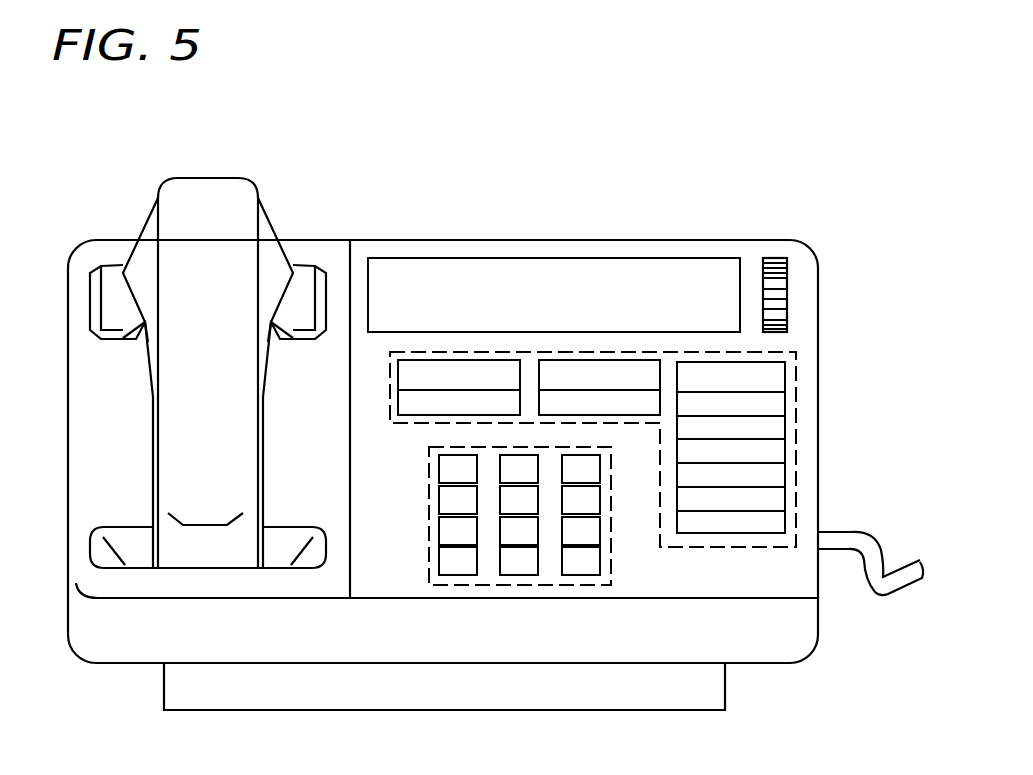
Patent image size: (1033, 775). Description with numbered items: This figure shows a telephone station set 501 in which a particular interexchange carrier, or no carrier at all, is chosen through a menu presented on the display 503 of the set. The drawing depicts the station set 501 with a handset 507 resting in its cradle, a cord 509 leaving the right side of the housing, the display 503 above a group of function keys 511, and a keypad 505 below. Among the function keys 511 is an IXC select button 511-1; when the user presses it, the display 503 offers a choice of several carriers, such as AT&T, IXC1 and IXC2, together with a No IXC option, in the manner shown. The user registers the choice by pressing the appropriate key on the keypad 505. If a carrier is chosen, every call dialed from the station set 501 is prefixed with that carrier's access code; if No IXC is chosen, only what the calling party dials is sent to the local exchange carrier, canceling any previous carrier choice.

The telephone station set 501 is at (755, 663).
The display 503 is at (477, 258).
The keypad 505 is at (611, 557).
The handset 507 is at (208, 180).
The telephone cord 509 is at (857, 530).
The function keys 511 is at (796, 366).
The IXC select button 511-1 is at (425, 390).